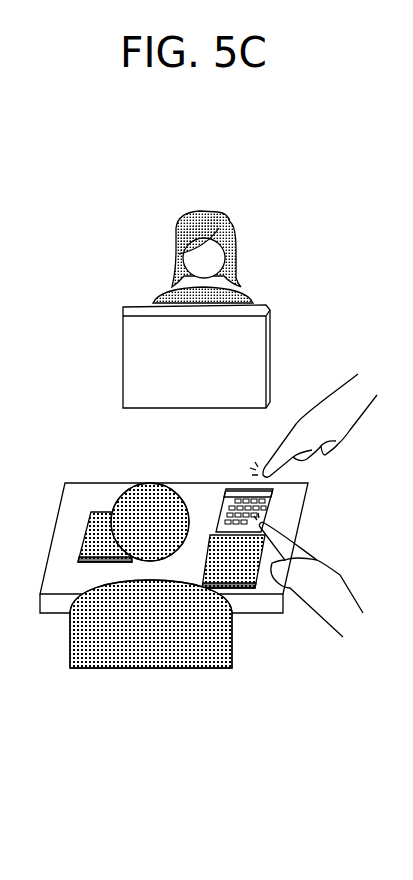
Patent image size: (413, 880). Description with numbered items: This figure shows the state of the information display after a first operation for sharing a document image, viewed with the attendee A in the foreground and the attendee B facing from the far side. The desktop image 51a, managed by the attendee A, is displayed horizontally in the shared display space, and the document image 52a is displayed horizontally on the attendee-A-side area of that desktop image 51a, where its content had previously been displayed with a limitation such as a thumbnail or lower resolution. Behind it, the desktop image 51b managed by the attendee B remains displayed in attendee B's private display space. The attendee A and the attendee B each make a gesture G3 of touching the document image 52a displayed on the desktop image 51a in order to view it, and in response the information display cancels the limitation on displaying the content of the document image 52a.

The attendee A is at (160, 668).
The attendee B is at (207, 207).
The desktop image 51a is at (88, 483).
The desktop image 51b is at (134, 306).
The document image 52a is at (235, 487).
The gesture G3 is at (274, 478).